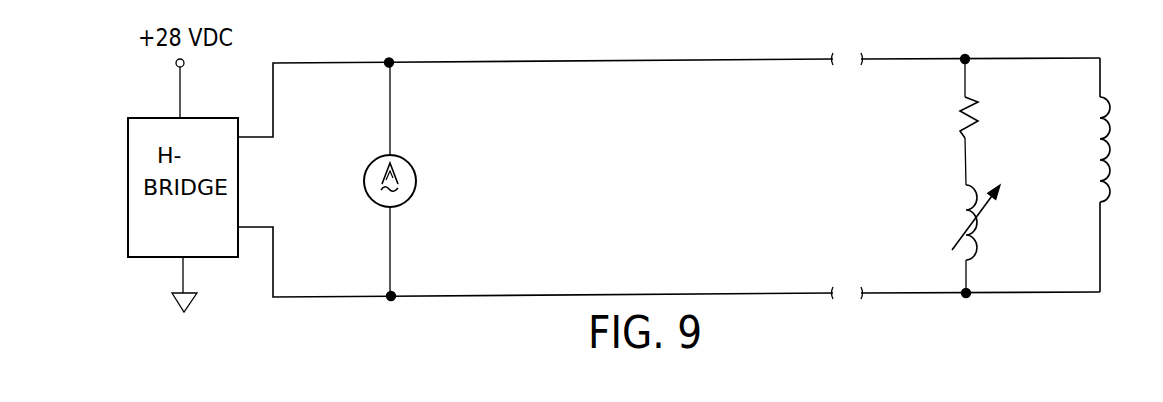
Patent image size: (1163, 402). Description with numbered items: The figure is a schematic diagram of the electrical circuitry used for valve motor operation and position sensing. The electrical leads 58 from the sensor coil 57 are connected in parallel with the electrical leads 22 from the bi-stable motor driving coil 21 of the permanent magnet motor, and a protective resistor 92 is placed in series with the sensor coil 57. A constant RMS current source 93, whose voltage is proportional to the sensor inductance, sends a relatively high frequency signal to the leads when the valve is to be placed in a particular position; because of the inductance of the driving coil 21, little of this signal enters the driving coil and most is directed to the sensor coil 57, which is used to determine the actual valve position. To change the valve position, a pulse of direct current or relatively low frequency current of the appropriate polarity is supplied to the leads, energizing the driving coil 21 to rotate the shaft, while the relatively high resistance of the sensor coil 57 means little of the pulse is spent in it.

The constant RMS current source 93 is at (365, 175).
The electrical leads 58 is at (965, 83).
The protective resistor 92 is at (961, 131).
The sensor coil 57 is at (968, 207).
The bi-stable motor driving coil 21 is at (1110, 172).
The electrical leads 22 is at (1100, 78).